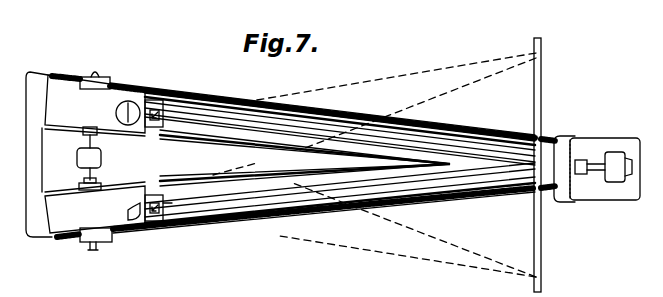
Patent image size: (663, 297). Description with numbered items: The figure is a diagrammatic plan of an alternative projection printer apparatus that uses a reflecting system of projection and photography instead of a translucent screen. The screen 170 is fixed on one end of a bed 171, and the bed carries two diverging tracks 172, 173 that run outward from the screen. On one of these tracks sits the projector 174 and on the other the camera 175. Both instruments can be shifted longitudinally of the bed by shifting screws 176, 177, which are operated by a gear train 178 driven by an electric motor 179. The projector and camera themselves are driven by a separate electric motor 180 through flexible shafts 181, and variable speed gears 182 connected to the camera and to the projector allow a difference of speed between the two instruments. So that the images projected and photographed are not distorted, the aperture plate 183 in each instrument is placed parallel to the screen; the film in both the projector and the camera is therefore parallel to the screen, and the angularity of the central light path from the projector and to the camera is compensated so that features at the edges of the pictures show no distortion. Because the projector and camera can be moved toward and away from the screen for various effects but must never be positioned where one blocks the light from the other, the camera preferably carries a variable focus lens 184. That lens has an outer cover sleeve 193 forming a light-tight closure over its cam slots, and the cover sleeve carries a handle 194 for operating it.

The screen 170 is at (541, 94).
The bed 171 is at (458, 140).
The track 172 is at (214, 100).
The track 173 is at (279, 208).
The projector 174 is at (105, 103).
The camera 175 is at (72, 226).
The shifting screw 176 is at (352, 205).
The shifting screw 177 is at (372, 118).
The gear train 178 is at (584, 147).
The electric motor 179 is at (618, 182).
The electric motor 180 is at (101, 158).
The flexible shafts 181 is at (95, 179).
The variable speed gears 182 is at (83, 134).
The aperture plate 183 is at (141, 218).
The variable focus lens 184 is at (166, 226).
The cover sleeve 193 is at (157, 112).
The handle 194 is at (166, 207).